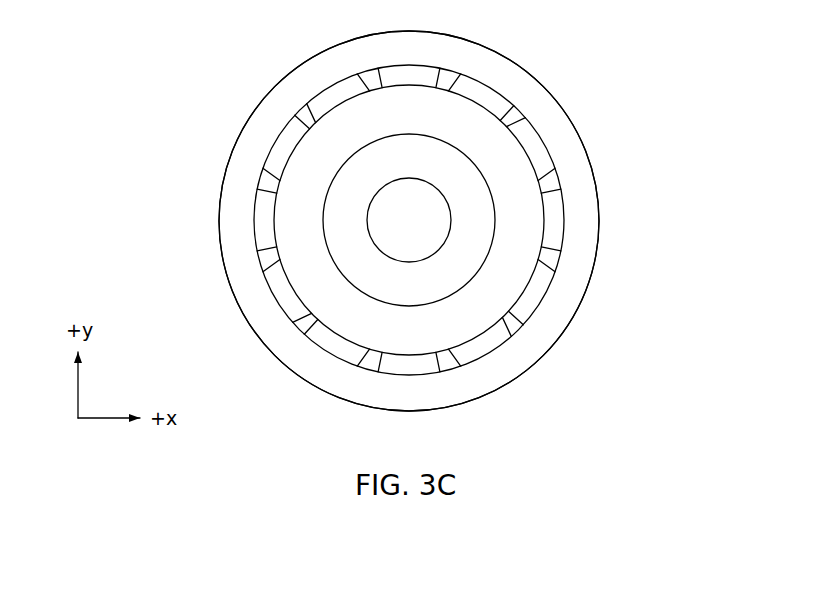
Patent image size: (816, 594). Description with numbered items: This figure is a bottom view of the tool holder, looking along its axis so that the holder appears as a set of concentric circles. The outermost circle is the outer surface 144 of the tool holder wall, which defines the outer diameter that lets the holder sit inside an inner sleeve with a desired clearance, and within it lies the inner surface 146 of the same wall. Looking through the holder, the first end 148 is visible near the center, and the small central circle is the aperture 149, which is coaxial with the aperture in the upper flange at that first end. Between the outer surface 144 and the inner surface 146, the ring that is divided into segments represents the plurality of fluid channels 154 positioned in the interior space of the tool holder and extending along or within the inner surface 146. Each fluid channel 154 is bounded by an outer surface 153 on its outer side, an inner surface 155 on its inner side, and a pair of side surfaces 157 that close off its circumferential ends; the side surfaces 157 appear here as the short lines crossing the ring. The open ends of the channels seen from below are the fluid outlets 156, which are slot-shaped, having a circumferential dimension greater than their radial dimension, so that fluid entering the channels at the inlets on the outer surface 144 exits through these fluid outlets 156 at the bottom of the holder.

The outer surface 144 is at (262, 123).
The inner surface 146 is at (542, 80).
The first end 148 is at (388, 153).
The aperture 149 is at (372, 192).
The outer surface 153 is at (288, 284).
The fluid channels 154 is at (281, 308).
The inner surface 155 is at (294, 284).
The fluid outlets 156 is at (547, 144).
The side surfaces 157 is at (262, 249).